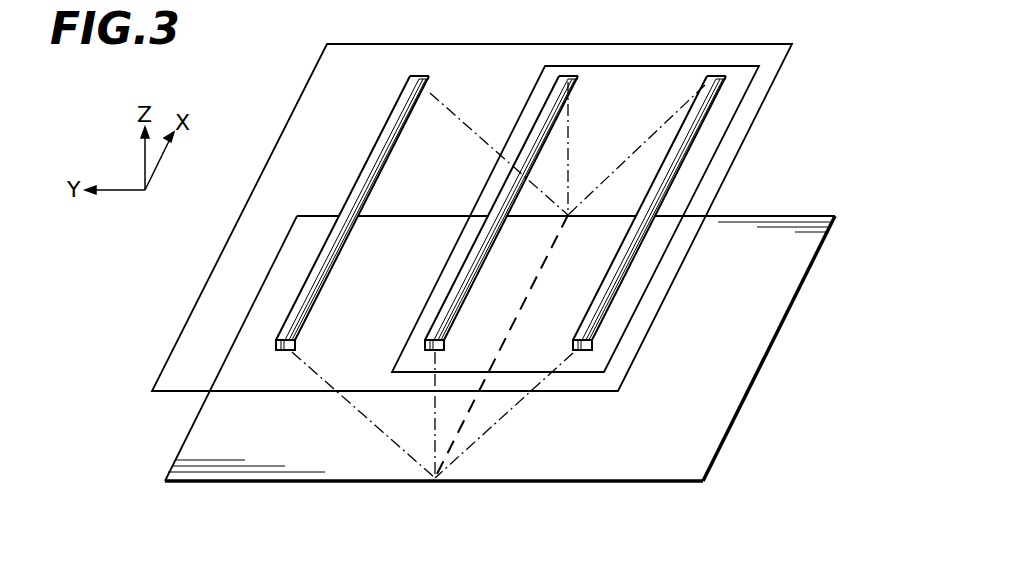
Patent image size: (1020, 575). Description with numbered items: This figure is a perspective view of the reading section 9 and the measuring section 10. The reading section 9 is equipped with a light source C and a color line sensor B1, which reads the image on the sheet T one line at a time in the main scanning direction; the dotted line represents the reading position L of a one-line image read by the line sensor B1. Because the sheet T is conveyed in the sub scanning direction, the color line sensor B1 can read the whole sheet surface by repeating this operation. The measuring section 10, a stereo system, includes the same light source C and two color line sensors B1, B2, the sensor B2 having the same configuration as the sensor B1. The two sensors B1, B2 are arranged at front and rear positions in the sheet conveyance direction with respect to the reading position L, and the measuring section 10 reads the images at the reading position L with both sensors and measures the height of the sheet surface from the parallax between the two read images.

The color line sensor B2 is at (418, 73).
The light source C is at (568, 73).
The color line sensor B1 is at (713, 73).
The measuring section 10 is at (770, 92).
The reading section 9 is at (713, 157).
The sheet T is at (778, 245).
The reading position L is at (455, 440).